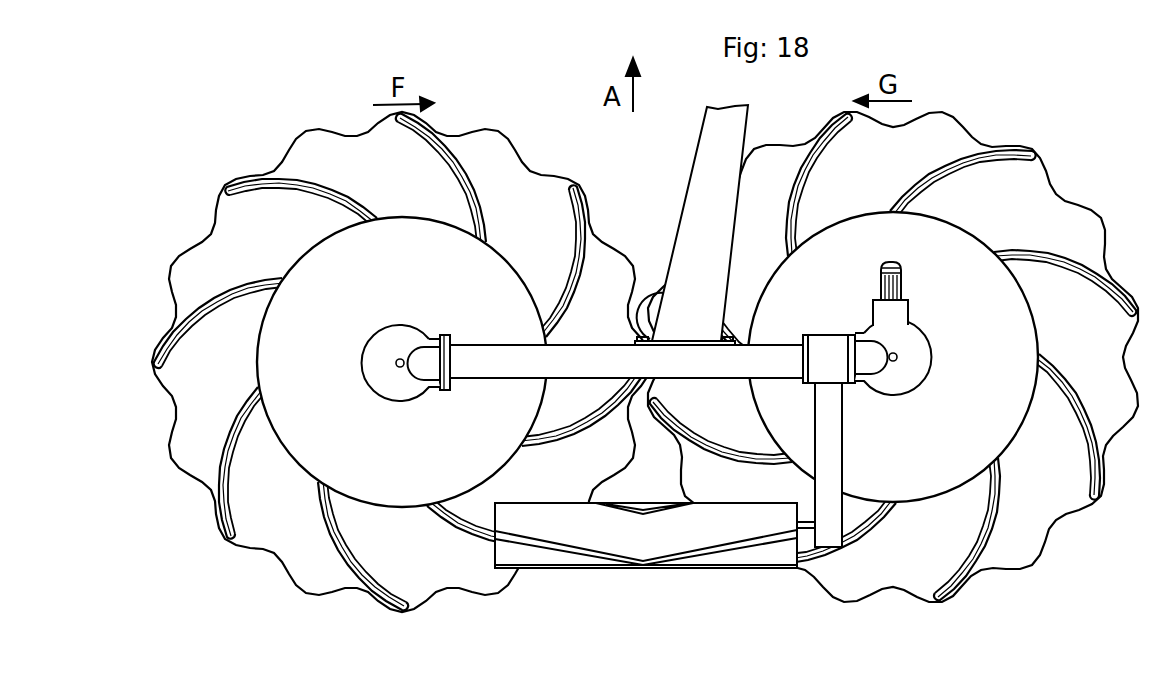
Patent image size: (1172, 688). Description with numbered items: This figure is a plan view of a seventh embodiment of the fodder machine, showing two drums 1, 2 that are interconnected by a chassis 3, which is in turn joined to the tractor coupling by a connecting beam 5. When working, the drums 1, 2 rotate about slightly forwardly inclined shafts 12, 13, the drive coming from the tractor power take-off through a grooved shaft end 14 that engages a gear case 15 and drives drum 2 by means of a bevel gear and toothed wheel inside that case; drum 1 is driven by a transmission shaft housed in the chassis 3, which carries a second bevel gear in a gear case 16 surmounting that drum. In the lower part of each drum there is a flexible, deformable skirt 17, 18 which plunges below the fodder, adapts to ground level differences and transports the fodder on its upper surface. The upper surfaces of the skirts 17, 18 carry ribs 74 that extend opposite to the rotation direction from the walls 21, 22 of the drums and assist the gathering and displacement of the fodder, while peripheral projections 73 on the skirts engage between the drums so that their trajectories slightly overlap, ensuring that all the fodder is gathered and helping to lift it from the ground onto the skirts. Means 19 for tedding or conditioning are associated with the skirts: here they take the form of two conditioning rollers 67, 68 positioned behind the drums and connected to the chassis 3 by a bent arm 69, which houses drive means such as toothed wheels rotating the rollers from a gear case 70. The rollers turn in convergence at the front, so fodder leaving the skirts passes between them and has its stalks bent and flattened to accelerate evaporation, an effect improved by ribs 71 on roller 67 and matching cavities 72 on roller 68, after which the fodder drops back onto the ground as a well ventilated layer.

The drum 1 is at (659, 362).
The drum 2 is at (893, 356).
The chassis 3 is at (604, 355).
The connecting beam 5 is at (710, 138).
The shaft 12 is at (396, 360).
The shaft 13 is at (897, 353).
The grooved shaft end 14 is at (904, 283).
The gear case 15 is at (918, 368).
The gear case 16 is at (380, 369).
The skirt 17 is at (255, 520).
The skirt 18 is at (1025, 525).
The means 19 is at (655, 560).
The wall 21 is at (256, 381).
The wall 22 is at (1040, 338).
The conditioning roller 67 is at (710, 567).
The conditioning roller 68 is at (665, 542).
The bent arm 69 is at (832, 446).
The gear case 70 is at (812, 345).
The ribs 71 is at (752, 569).
The cavities 72 is at (620, 565).
The projections 73 is at (660, 295).
The ribs 74 is at (586, 207).